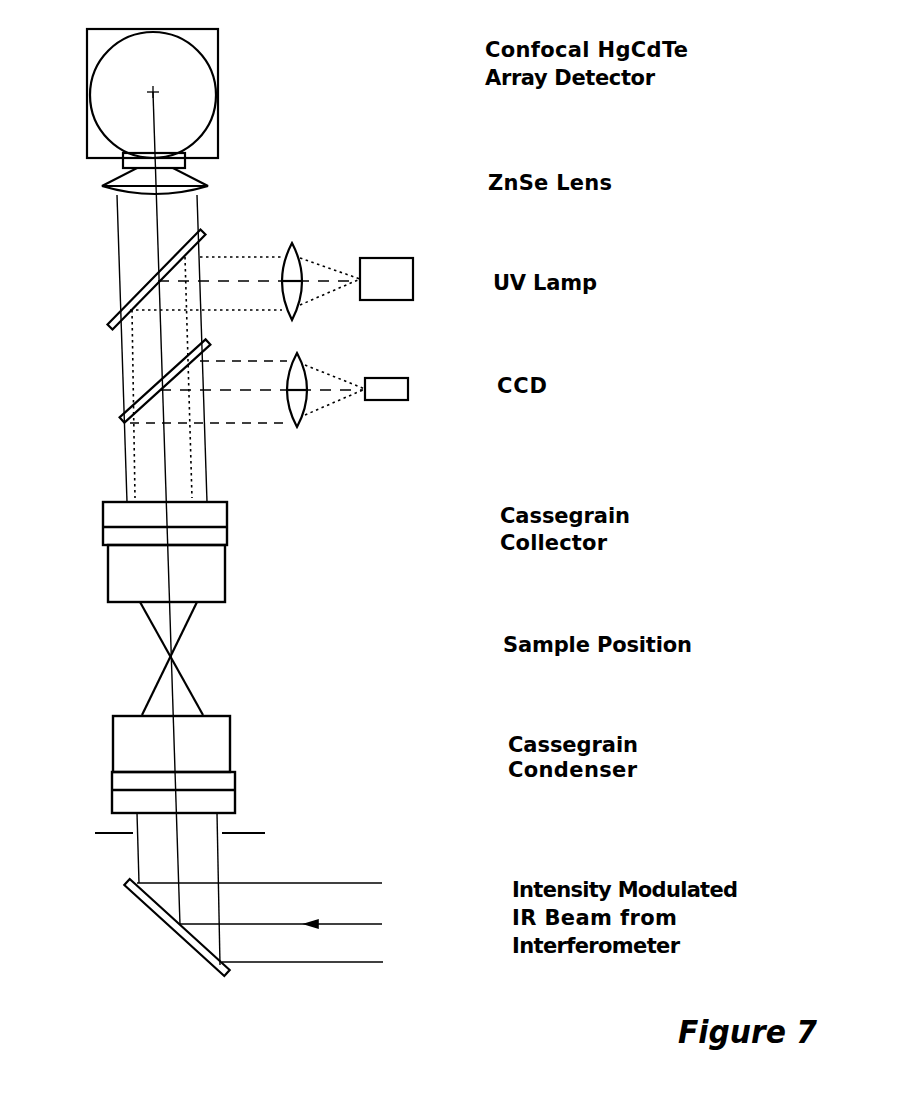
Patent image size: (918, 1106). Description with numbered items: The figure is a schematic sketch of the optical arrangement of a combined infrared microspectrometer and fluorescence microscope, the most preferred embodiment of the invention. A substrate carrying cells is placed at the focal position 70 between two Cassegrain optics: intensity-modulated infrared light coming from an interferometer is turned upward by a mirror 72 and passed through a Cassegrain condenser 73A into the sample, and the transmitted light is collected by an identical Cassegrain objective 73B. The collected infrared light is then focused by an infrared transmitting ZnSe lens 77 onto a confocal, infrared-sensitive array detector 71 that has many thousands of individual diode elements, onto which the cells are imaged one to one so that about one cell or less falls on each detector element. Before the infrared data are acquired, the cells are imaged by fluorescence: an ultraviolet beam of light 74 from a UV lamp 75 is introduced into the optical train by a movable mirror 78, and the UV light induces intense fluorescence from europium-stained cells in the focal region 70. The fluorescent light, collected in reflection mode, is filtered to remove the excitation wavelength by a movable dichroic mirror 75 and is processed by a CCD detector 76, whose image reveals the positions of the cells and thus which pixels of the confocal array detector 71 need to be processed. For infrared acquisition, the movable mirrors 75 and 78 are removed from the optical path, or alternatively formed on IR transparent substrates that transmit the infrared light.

The focal position 70 is at (168, 658).
The confocal infrared-sensitive array detector 71 is at (223, 143).
The mirror directing intensity modulated IR beam 72 is at (292, 878).
The Cassegrain condenser 73A is at (225, 607).
The Cassegrain objective 73B is at (235, 787).
The ultraviolet beam of light 74 is at (230, 253).
The UV lamp / movable dichroic mirror 75 is at (363, 252).
The CCD detector 76 is at (380, 375).
The ZnSe lens 77 is at (98, 193).
The movable mirror 78 is at (110, 317).